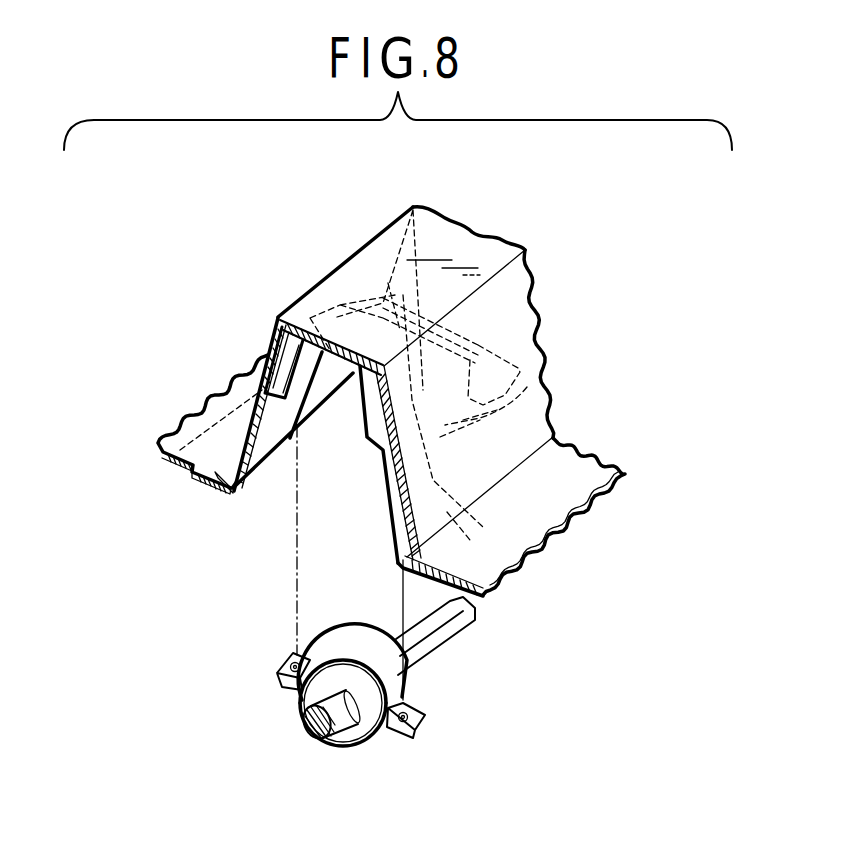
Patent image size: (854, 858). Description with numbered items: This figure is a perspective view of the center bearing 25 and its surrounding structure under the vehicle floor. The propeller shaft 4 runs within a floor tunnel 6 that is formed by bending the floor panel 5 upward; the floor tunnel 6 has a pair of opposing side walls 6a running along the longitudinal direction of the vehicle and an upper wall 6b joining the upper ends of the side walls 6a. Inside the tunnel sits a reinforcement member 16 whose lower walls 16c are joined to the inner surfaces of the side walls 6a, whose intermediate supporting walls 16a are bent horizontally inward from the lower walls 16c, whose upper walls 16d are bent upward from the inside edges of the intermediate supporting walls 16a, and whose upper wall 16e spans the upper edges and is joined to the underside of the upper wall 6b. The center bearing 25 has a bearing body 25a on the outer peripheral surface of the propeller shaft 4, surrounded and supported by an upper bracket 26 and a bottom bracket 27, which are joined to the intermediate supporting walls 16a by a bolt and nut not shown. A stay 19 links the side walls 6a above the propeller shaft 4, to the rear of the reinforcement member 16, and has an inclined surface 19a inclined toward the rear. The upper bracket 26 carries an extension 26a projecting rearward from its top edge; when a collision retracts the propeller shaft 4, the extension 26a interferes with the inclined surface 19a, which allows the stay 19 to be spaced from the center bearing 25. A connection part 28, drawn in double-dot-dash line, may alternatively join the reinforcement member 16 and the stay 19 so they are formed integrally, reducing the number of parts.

The propeller shaft 4 is at (300, 717).
The floor panel 5 is at (577, 470).
The floor tunnel 6 is at (472, 245).
The side walls 6a is at (267, 350).
The upper wall 6b is at (392, 232).
The reinforcement member 16 is at (453, 485).
The intermediate supporting walls 16a is at (377, 455).
The lower walls 16c is at (232, 502).
The upper walls 16d is at (355, 398).
The upper wall 16e is at (322, 327).
The stay 19 is at (480, 327).
The inclined surface 19a is at (383, 265).
The center bearing 25 is at (382, 750).
The bearing body 25a is at (293, 695).
The upper bracket 26 is at (390, 693).
The extension 26a is at (330, 677).
The bottom bracket 27 is at (353, 747).
The connection part 28 is at (527, 387).